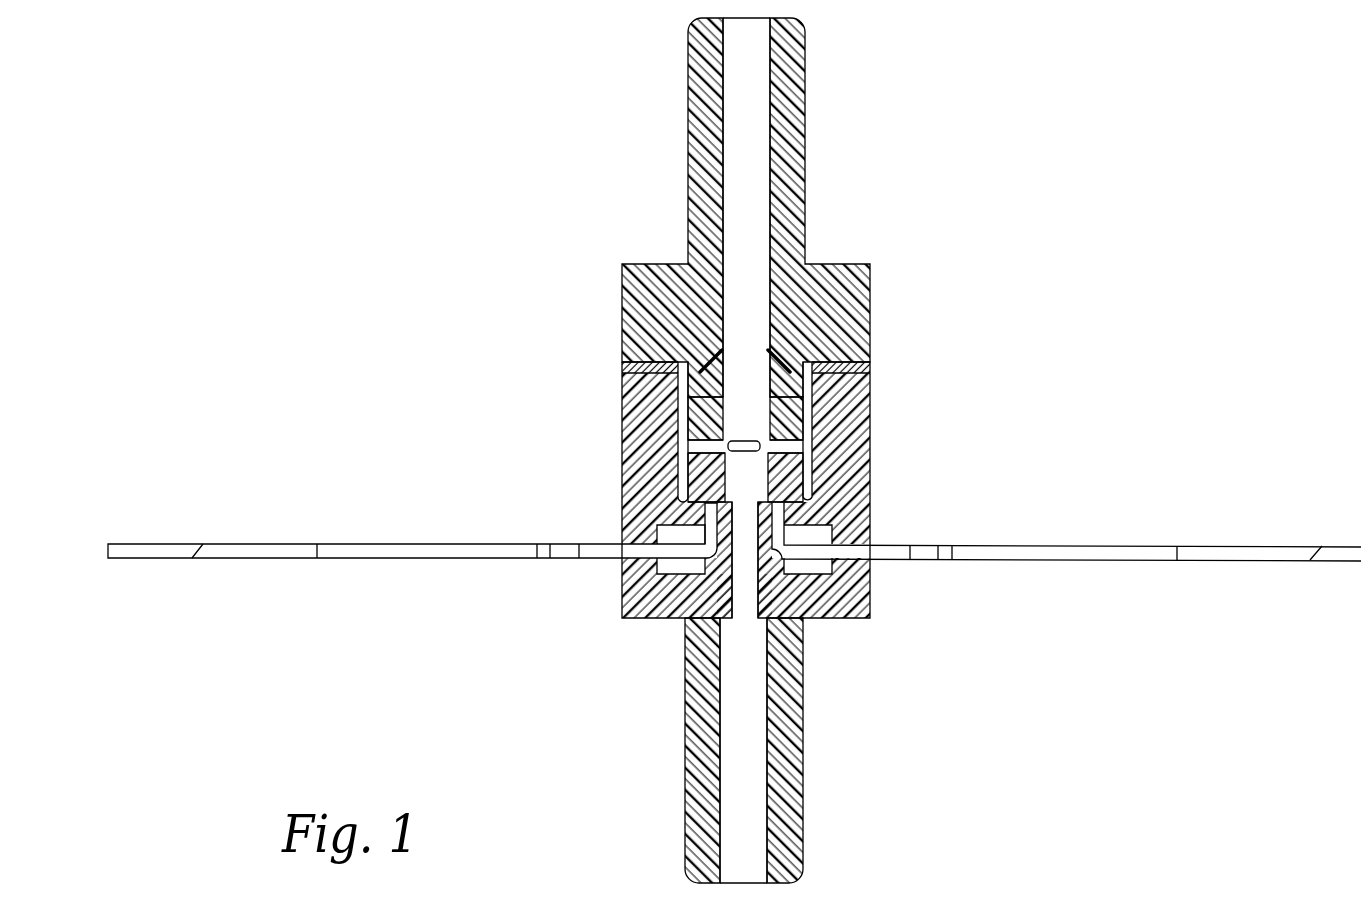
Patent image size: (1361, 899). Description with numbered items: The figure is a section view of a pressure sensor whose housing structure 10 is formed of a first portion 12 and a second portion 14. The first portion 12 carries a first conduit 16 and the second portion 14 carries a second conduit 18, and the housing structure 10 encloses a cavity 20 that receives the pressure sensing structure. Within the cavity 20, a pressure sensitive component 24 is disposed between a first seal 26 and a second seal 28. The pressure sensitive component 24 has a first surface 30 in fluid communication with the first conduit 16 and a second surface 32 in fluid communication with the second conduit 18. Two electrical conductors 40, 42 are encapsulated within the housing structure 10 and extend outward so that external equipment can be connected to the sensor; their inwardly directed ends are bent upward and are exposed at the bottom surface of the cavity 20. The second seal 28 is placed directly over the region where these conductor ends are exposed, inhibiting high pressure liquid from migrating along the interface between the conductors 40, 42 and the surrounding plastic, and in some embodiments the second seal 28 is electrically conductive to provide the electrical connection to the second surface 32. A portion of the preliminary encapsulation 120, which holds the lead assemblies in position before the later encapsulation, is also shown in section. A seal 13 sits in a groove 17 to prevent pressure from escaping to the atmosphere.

The housing structure 10 is at (927, 191).
The first portion 12 is at (862, 313).
The seal 13 is at (648, 352).
The second portion 14 is at (792, 723).
The first conduit 16 is at (758, 160).
The groove 17 is at (624, 368).
The second conduit 18 is at (755, 825).
The cavity 20 is at (745, 448).
The pressure sensitive component 24 is at (700, 447).
The first seal 26 is at (700, 418).
The second seal 28 is at (695, 481).
The first surface 30 is at (770, 432).
The second surface 32 is at (790, 476).
The electrical conductor 40 is at (396, 560).
The electrical conductor 42 is at (1047, 560).
The preliminary encapsulation 120 is at (677, 570).